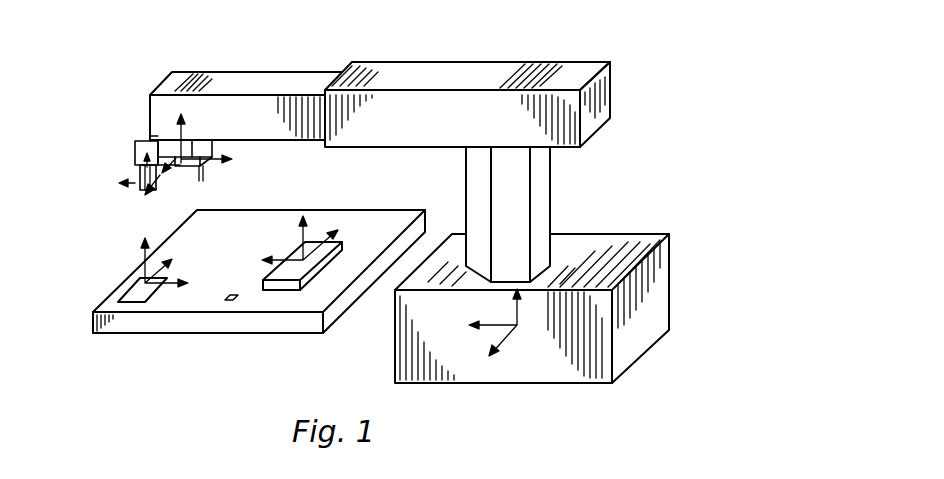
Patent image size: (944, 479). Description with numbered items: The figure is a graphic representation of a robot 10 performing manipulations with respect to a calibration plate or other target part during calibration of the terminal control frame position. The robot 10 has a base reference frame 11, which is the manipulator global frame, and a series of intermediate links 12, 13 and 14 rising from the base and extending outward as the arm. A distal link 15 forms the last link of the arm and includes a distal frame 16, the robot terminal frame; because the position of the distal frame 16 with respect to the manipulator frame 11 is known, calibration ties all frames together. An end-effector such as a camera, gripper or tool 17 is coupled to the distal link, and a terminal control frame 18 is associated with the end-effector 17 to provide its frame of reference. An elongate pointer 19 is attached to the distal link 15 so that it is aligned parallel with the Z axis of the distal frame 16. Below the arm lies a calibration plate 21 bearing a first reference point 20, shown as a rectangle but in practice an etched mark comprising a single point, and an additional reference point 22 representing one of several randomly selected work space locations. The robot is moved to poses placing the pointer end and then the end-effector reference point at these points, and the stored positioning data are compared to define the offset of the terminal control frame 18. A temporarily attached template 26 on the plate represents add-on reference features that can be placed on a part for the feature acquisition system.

The robot 10 is at (590, 54).
The base reference frame 11 is at (508, 330).
The intermediate link 12 is at (541, 202).
The intermediate link 13 is at (421, 71).
The intermediate link 14 is at (210, 80).
The distal link 15 is at (207, 143).
The distal frame 16 is at (186, 163).
The end-effector 17 is at (143, 173).
The terminal control frame (TCF) 18 is at (128, 197).
The elongate pointer 19 is at (205, 174).
The first reference point 20 is at (120, 290).
The calibration plate 21 is at (100, 334).
The additional reference point 22 is at (234, 301).
The template 26 is at (298, 270).